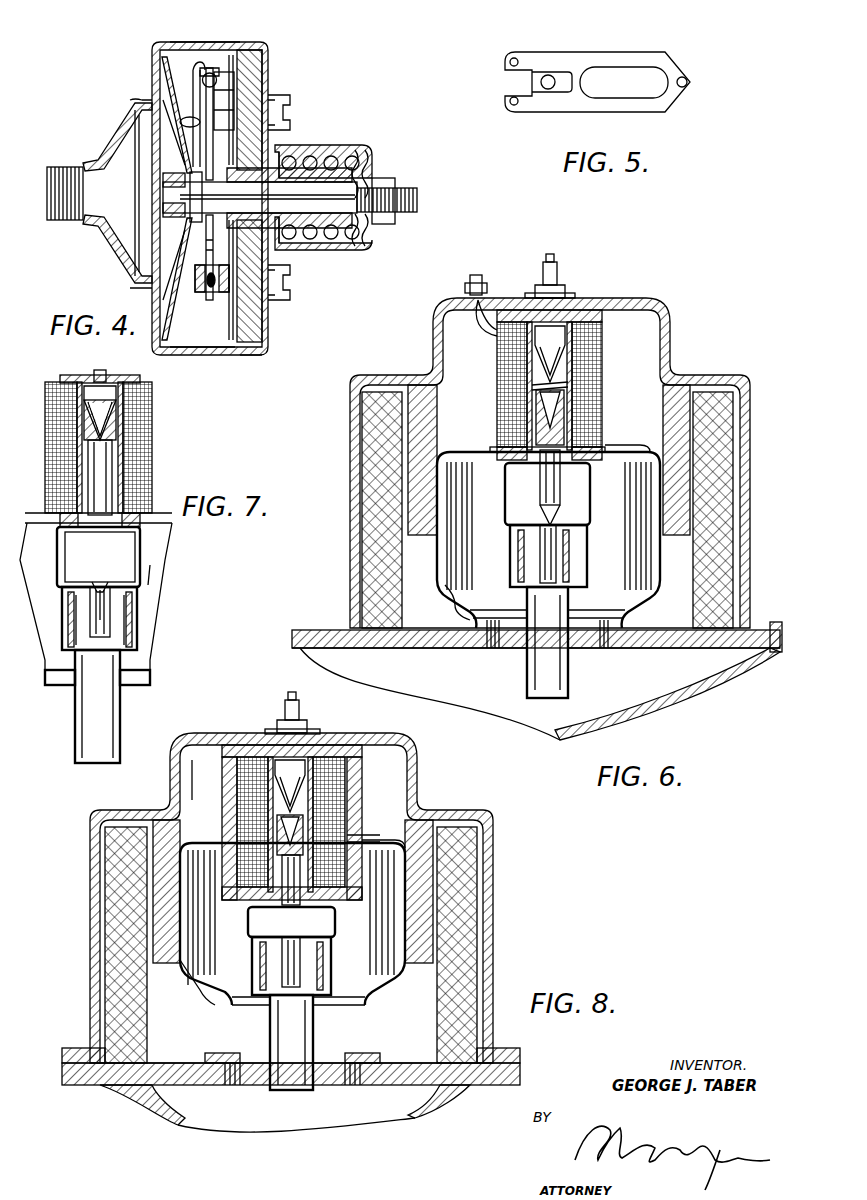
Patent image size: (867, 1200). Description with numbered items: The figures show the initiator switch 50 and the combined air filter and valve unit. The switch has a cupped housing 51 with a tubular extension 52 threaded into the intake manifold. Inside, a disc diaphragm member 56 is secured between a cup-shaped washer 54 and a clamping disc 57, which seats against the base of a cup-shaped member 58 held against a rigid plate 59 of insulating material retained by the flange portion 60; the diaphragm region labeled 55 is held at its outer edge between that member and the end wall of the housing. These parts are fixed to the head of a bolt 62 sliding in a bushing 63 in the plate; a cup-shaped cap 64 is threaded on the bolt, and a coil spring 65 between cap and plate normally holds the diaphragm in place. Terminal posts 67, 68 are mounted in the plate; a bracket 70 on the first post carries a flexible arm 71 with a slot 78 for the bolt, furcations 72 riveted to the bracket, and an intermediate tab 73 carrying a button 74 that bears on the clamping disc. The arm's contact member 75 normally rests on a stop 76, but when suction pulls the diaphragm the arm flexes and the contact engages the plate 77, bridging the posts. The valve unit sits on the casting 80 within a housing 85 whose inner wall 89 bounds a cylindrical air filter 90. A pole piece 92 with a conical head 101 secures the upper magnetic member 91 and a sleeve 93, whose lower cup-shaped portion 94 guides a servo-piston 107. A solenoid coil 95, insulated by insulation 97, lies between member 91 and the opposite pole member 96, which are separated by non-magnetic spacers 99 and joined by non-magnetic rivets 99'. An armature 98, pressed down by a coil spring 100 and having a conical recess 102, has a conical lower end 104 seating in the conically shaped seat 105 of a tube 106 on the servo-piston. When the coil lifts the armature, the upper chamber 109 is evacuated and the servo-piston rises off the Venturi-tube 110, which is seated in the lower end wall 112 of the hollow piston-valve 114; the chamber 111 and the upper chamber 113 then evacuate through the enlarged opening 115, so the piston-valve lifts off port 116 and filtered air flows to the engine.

In FIG. 4, the initiator switch 50 is at (218, 356).
In FIG. 4, the cupped housing 51 is at (200, 42).
In FIG. 4, the tubular extension 52 is at (95, 222).
In FIG. 4, the cup-shaped washer 54 is at (150, 250).
In FIG. 4, the diaphragm flange 55 is at (140, 112).
In FIG. 4, the disc diaphragm member 56 is at (160, 85).
In FIG. 4, the clamping disc 57 is at (196, 140).
In FIG. 4, the cup-shaped member 58 is at (190, 345).
In FIG. 4, the rigid plate 59 is at (268, 62).
In FIG. 4, the flange portion 60 is at (268, 349).
In FIG. 4, the bolt 62 is at (222, 205).
In FIG. 4, the bushing 63 is at (306, 232).
In FIG. 4, the cup-shaped cap 64 is at (330, 148).
In FIG. 4, the coil spring 65 is at (350, 235).
In FIG. 4, the terminal post 67 is at (288, 104).
In FIG. 4, the terminal post 68 is at (288, 298).
In FIG. 4, the bracket 70 is at (228, 125).
In FIG. 4, the flexible arm 71 is at (226, 140).
In FIG. 5, the flexible arm 71 is at (578, 105).
In FIG. 5, the furcations 72 is at (505, 100).
In FIG. 5, the intermediate tab 73 is at (540, 84).
In FIG. 4, the button 74 is at (195, 118).
In FIG. 5, the button 74 is at (556, 72).
In FIG. 4, the contact member 75 is at (218, 295).
In FIG. 5, the contact member 75 is at (688, 84).
In FIG. 4, the stop 76 is at (195, 298).
In FIG. 4, the plate 77 is at (218, 280).
In FIG. 5, the slot 78 is at (630, 70).
In FIG. 6, the casting 80 is at (680, 690).
In FIG. 8, the casting 80 is at (170, 1122).
In FIG. 6, the housing 85 is at (672, 345).
In FIG. 8, the housing 85 is at (428, 808).
In FIG. 6, the inner wall 89 is at (676, 525).
In FIG. 8, the inner wall 89 is at (418, 965).
In FIG. 6, the air filter 90 is at (735, 462).
In FIG. 8, the air filter 90 is at (478, 937).
In FIG. 6, the upper portion of solenoid outer magnetic member 91 is at (602, 318).
In FIG. 8, the upper portion of solenoid outer magnetic member 91 is at (362, 756).
In FIG. 6, the pole piece 92 is at (580, 298).
In FIG. 7, the sleeve 93 is at (84, 455).
In FIG. 6, the sleeve 93 is at (535, 372).
In FIG. 7, the cup-shaped portion 94 is at (137, 590).
In FIG. 6, the cup-shaped portion 94 is at (590, 495).
In FIG. 8, the cup-shaped portion 94 is at (335, 930).
In FIG. 7, the solenoid coil 95 is at (140, 437).
In FIG. 6, the solenoid coil 95 is at (590, 392).
In FIG. 8, the solenoid coil 95 is at (330, 795).
In FIG. 6, the magnetic member 96 is at (490, 453).
In FIG. 8, the magnetic member 96 is at (240, 895).
In FIG. 6, the insulation 97 is at (572, 418).
In FIG. 7, the armature 98 is at (112, 488).
In FIG. 6, the armature 98 is at (562, 487).
In FIG. 8, the armature 98 is at (291, 880).
In FIG. 8, the non-magnetic spacers 99 is at (276, 828).
In FIG. 8, the non-magnetic rivets 99' is at (372, 807).
In FIG. 7, the coil spring 100 is at (45, 418).
In FIG. 6, the coil spring 100 is at (565, 370).
In FIG. 8, the coil spring 100 is at (237, 795).
In FIG. 6, the conical head 101 is at (497, 352).
In FIG. 8, the conical head 101 is at (222, 768).
In FIG. 6, the conical recess 102 is at (545, 398).
In FIG. 7, the conical lower end 104 is at (95, 535).
In FIG. 6, the conical lower end 104 is at (558, 510).
In FIG. 7, the conically shaped seat 105 is at (105, 580).
In FIG. 7, the tube 106 is at (98, 630).
In FIG. 6, the tube 106 is at (543, 570).
In FIG. 8, the tube 106 is at (292, 960).
In FIG. 7, the servo-piston 107 is at (137, 634).
In FIG. 6, the servo-piston 107 is at (587, 572).
In FIG. 8, the servo-piston 107 is at (331, 950).
In FIG. 7, the upper chamber 109 is at (125, 545).
In FIG. 6, the upper chamber 109 is at (512, 482).
In FIG. 7, the Venturi-tube 110 is at (118, 655).
In FIG. 6, the Venturi-tube 110 is at (570, 592).
In FIG. 8, the Venturi-tube 110 is at (270, 1036).
In FIG. 6, the chamber 111 is at (640, 588).
In FIG. 8, the chamber 111 is at (200, 995).
In FIG. 6, the lower end wall 112 is at (500, 600).
In FIG. 8, the lower end wall 112 is at (345, 1005).
In FIG. 6, the upper chamber 113 is at (440, 352).
In FIG. 8, the upper chamber 113 is at (182, 780).
In FIG. 7, the hollow piston-valve 114 is at (160, 562).
In FIG. 6, the hollow piston-valve 114 is at (445, 585).
In FIG. 8, the hollow piston-valve 114 is at (210, 1005).
In FIG. 6, the enlarged opening 115 is at (620, 452).
In FIG. 8, the enlarged opening 115 is at (378, 840).
In FIG. 6, the port 116 is at (596, 640).
In FIG. 8, the port 116 is at (336, 1078).